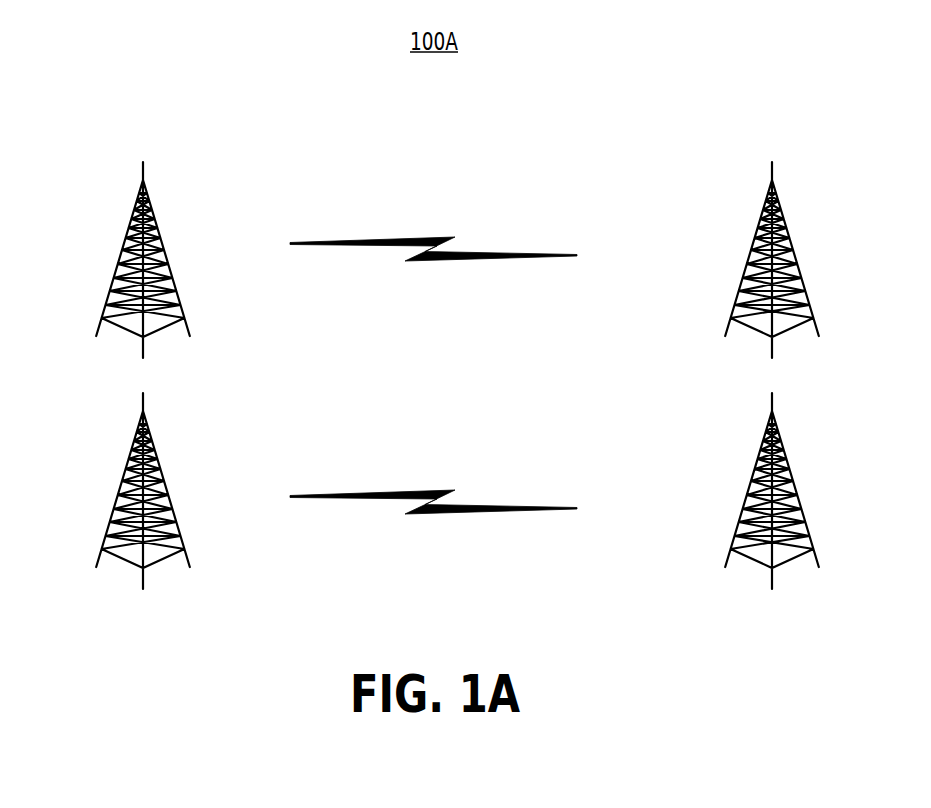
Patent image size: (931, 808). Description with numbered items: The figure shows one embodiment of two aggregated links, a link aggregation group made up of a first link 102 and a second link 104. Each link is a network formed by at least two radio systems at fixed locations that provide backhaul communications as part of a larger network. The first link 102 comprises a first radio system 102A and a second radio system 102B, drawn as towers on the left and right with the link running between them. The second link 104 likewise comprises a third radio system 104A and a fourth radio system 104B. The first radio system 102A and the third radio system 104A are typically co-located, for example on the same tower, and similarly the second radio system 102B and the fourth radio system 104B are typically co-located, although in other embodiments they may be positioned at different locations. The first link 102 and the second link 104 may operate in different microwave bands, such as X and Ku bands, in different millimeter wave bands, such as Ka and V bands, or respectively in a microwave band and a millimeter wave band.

The first link 102 is at (502, 506).
The first radio system 102A is at (112, 523).
The second radio system 102B is at (742, 523).
The second link 104 is at (502, 253).
The third radio system 104A is at (112, 292).
The fourth radio system 104B is at (742, 293).